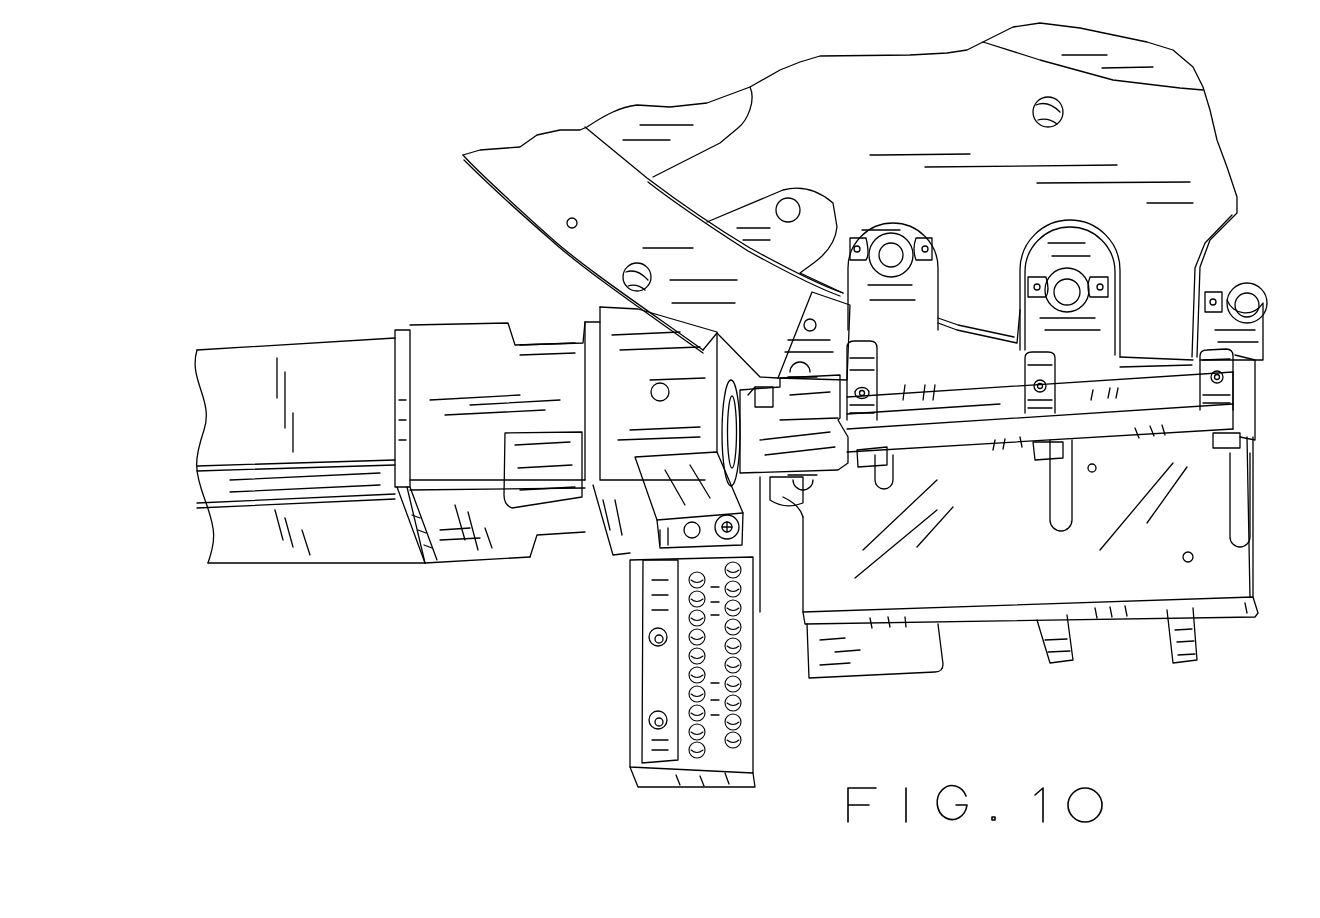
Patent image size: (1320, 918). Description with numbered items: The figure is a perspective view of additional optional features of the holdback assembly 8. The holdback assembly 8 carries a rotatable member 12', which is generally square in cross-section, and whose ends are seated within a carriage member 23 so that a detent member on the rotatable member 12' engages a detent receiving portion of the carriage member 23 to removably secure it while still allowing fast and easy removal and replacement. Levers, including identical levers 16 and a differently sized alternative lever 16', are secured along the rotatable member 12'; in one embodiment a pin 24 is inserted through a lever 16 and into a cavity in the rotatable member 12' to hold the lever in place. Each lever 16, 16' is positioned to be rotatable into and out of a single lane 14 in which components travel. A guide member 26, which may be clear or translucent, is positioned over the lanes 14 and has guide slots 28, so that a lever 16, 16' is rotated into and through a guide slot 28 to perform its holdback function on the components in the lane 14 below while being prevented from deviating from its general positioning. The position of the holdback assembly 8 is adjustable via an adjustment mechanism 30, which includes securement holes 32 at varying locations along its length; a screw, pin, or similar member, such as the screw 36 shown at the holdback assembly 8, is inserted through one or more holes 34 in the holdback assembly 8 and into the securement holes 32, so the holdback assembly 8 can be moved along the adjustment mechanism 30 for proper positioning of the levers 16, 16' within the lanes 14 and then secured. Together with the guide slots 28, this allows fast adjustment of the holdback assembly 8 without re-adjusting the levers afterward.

The holdback assembly 8 is at (487, 657).
The rotatable member 12' is at (1040, 541).
The lane 14 is at (977, 623).
The lever 16 is at (1051, 543).
The lever 16' is at (814, 547).
The carriage member 23 is at (790, 458).
The pin 24 is at (860, 401).
The guide member 26 is at (873, 587).
The guide slot 28 is at (890, 490).
The adjustment mechanism 30 is at (614, 695).
The securement hole 32 is at (690, 618).
The hole 34 is at (684, 542).
The screw 36 is at (722, 540).